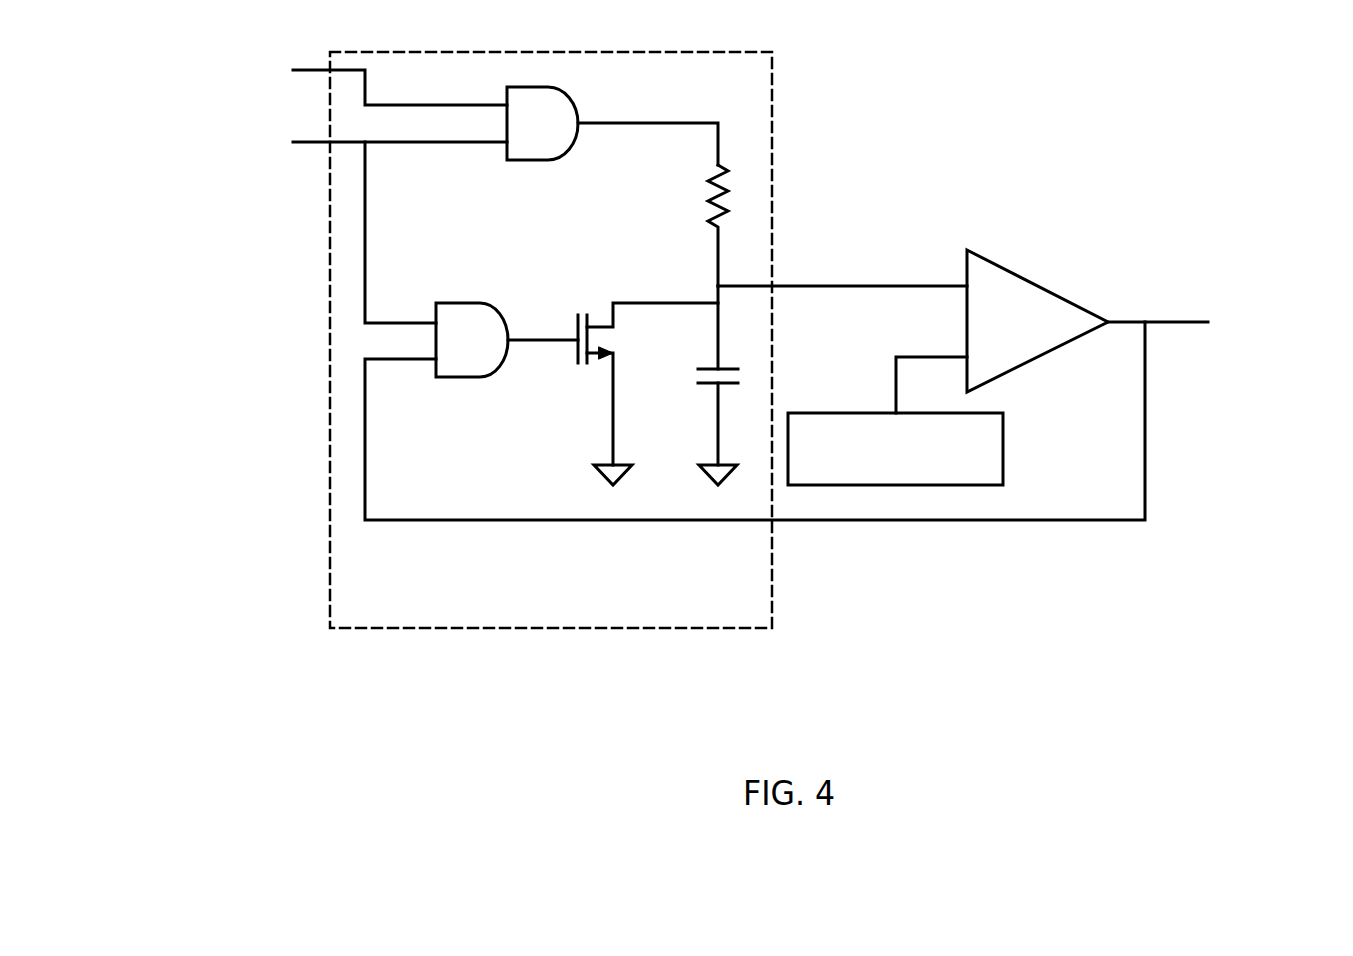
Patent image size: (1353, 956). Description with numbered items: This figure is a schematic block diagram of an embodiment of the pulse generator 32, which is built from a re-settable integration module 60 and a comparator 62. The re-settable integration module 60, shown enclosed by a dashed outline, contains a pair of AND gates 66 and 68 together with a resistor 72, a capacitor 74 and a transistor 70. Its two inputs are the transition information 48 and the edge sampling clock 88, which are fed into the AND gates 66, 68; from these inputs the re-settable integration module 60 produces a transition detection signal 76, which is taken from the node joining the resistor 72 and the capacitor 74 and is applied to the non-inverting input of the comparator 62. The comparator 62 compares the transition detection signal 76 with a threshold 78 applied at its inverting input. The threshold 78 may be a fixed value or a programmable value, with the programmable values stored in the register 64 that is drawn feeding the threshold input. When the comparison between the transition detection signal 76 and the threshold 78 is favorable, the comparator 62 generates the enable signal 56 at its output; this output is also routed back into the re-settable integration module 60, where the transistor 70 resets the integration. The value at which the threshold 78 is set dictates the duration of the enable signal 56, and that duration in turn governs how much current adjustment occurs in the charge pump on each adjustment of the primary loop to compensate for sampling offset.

The pulse generator 32 is at (721, 443).
The transition information 48 is at (316, 74).
The enable signal 56 is at (841, 408).
The re-settable integration module 60 is at (551, 340).
The comparator 62 is at (1037, 321).
The register 64 is at (895, 449).
The AND gate 66 is at (507, 340).
The AND gate 68 is at (612, 126).
The transistor 70 is at (648, 394).
The resistor 72 is at (693, 225).
The capacitor 74 is at (698, 385).
The transition detection signal 76 is at (878, 286).
The threshold 78 is at (893, 370).
The edge sampling clock 88 is at (320, 219).